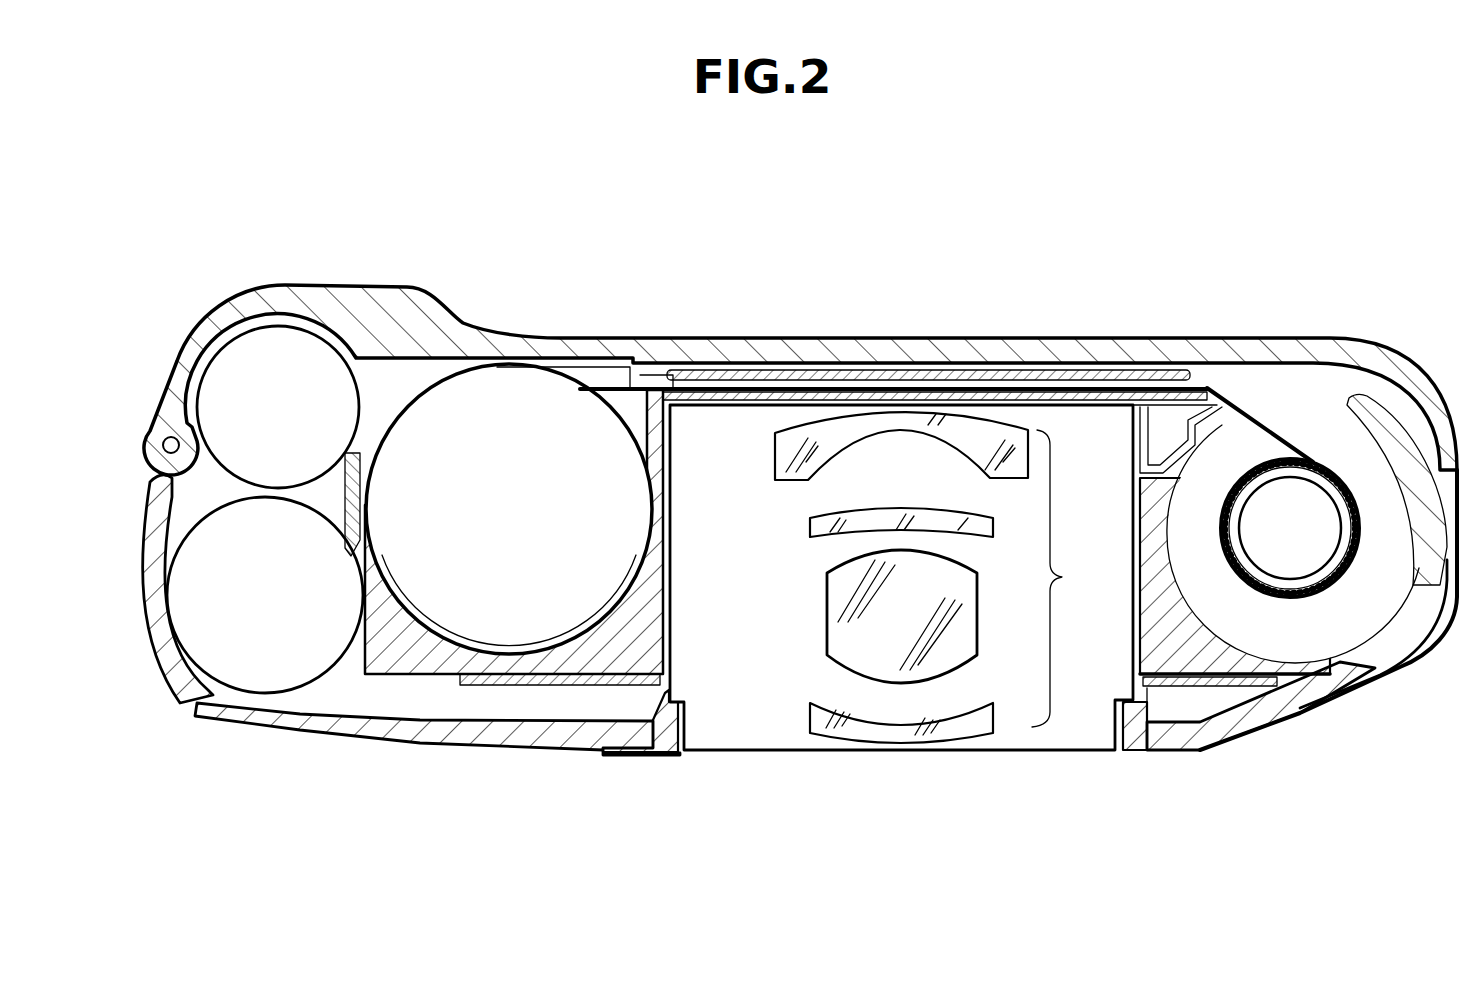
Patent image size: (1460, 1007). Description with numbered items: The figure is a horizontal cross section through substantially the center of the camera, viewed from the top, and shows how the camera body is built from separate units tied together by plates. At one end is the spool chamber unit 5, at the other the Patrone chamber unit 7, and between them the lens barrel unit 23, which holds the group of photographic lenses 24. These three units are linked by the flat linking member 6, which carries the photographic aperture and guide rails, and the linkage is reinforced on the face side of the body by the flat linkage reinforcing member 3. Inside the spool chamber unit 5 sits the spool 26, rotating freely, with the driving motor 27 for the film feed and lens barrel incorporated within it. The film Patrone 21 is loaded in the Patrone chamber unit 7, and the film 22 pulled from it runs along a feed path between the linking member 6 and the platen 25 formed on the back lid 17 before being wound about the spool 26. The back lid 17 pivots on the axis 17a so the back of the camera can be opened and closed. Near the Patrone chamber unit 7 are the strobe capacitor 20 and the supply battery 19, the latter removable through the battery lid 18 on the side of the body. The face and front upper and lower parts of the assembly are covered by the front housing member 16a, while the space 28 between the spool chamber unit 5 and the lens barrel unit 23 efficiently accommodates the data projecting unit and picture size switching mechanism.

The linkage reinforcing member 3 is at (518, 688).
The spool chamber unit 5 is at (1333, 683).
The linking member 6 is at (673, 388).
The Patrone chamber unit 7 is at (383, 667).
The front housing member 16a is at (642, 745).
The back lid 17 is at (880, 348).
The axis 17a is at (171, 437).
The battery lid 18 is at (163, 690).
The supply battery 19 is at (270, 670).
The strobe capacitor 20 is at (268, 352).
The film Patrone 21 is at (432, 413).
The film 22 is at (642, 395).
The lens barrel unit 23 is at (782, 737).
The group of photographic lenses 24 is at (942, 577).
The platen 25 is at (783, 375).
The spool 26 is at (1328, 586).
The driving motor 27 is at (1273, 560).
The space 28 is at (1148, 448).